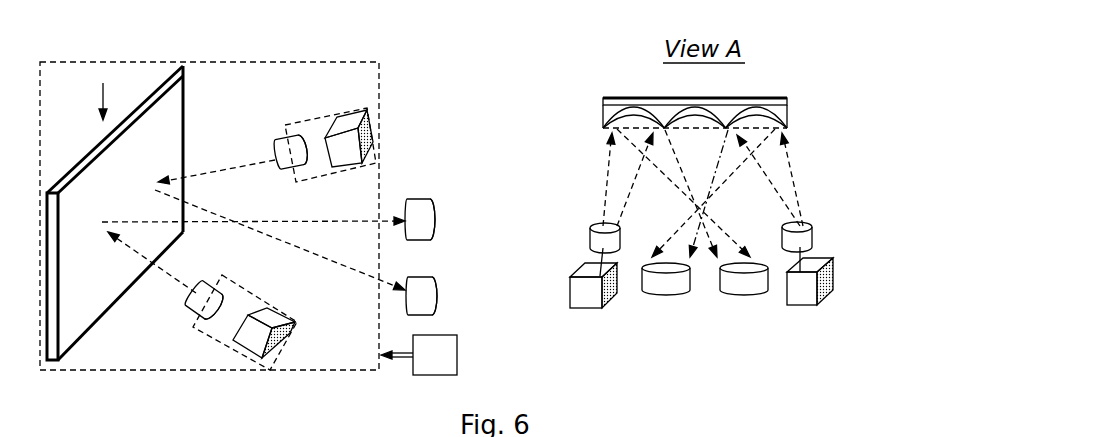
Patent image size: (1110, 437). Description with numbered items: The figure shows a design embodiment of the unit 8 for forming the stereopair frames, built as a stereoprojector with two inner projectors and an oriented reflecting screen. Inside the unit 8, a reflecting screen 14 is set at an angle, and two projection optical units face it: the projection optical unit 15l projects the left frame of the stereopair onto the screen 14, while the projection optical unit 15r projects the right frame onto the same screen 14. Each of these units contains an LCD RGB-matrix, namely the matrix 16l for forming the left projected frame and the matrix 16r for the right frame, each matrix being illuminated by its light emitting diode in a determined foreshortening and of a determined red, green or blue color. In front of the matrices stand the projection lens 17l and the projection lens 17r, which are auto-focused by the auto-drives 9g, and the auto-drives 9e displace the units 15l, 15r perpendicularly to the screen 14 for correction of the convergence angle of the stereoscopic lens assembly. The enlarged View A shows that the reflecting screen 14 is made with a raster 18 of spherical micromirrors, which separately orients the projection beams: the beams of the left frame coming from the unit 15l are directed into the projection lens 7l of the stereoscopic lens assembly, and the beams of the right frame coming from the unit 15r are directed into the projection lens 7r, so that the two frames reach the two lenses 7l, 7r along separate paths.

The reflecting screen 14 is at (163, 110).
The raster 18 is at (612, 110).
The unit for forming of the stereopair frames 8 is at (104, 371).
The auto-drive 9e is at (248, 218).
The auto-drive for auto-focusing 9g is at (278, 143).
The projection optical unit 15l is at (336, 110).
The projection optical unit 15r is at (218, 342).
The LCD RGB-matrix 16l is at (371, 133).
The LCD RGB-matrix 16r is at (276, 352).
The projection lens 17l is at (528, 184).
The projection lens 17r is at (187, 303).
The projection lens of the stereoscopic lens assembly 7l is at (421, 198).
The projection lens of the stereoscopic lens assembly 7r is at (432, 283).